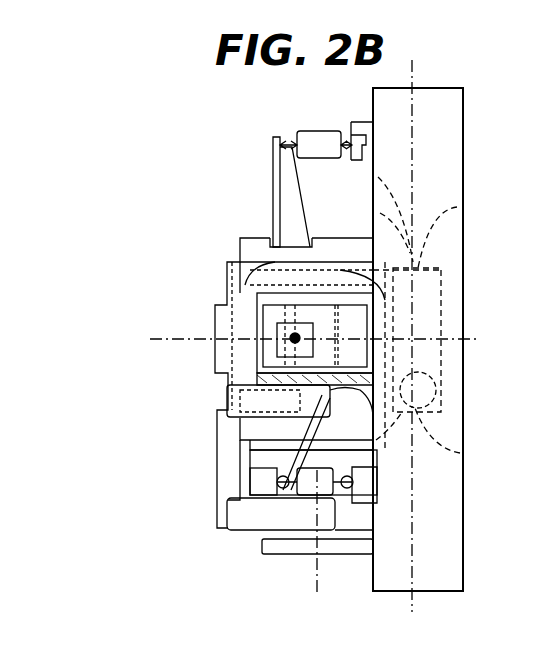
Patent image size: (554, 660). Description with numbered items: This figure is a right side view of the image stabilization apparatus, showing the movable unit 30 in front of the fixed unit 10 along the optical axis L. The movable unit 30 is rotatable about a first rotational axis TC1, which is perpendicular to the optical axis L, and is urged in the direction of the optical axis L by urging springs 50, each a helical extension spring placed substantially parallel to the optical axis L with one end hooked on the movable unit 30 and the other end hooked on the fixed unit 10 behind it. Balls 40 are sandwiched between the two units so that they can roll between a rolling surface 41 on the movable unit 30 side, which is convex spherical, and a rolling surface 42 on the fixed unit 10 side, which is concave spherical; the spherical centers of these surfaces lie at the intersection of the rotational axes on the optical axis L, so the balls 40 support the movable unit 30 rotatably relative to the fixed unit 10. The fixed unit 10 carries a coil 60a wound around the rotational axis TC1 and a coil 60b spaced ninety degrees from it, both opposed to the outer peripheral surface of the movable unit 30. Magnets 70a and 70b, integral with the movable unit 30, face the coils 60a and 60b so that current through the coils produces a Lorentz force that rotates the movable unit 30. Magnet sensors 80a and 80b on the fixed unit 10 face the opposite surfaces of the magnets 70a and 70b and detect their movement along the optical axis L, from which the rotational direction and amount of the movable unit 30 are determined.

The fixed unit 10 is at (396, 118).
The movable unit 30 is at (271, 224).
The balls 40 is at (376, 180).
The rolling surface 41 is at (372, 216).
The rolling surface 42 is at (458, 207).
The urging springs 50 is at (312, 144).
The coil 60a is at (234, 260).
The magnet 70a is at (242, 302).
The rotational axis TC1 is at (282, 337).
The optical axis L is at (304, 336).
The magnet sensor 80a is at (265, 380).
The coil 60b is at (252, 489).
The magnet 70b is at (240, 540).
The magnet sensor 80b is at (342, 556).